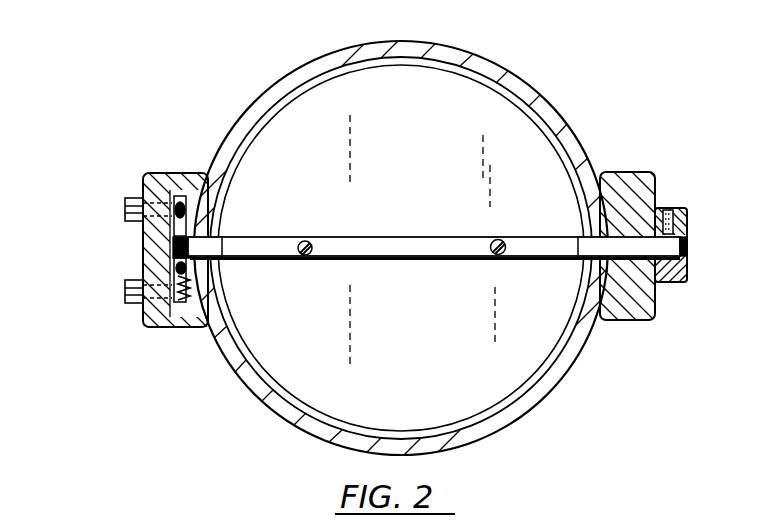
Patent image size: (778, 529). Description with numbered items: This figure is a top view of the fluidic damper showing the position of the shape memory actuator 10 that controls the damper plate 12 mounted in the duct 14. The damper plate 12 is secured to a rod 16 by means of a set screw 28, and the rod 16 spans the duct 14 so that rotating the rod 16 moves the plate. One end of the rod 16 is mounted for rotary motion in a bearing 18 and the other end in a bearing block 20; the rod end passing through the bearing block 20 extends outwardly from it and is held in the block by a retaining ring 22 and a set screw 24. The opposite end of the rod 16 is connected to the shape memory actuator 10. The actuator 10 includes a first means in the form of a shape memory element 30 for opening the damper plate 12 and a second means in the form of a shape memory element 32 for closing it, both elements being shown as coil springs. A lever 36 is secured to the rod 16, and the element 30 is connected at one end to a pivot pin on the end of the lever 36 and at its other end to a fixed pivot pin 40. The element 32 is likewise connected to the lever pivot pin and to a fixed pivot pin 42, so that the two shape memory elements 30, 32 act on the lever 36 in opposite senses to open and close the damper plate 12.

The shape memory actuator 10 is at (185, 320).
The damper plate 12 is at (498, 343).
The duct 14 is at (553, 110).
The rod 16 is at (403, 236).
The bearing 18 is at (220, 234).
The bearing block 20 is at (649, 178).
The retaining ring 22 is at (688, 273).
The set screw 24 is at (672, 208).
The set screw 28 is at (301, 262).
The shape memory element 30 is at (150, 231).
The shape memory element 32 is at (150, 266).
The lever 36 is at (150, 248).
The fixed pivot pin 40 is at (125, 202).
The fixed pivot pin 42 is at (125, 293).